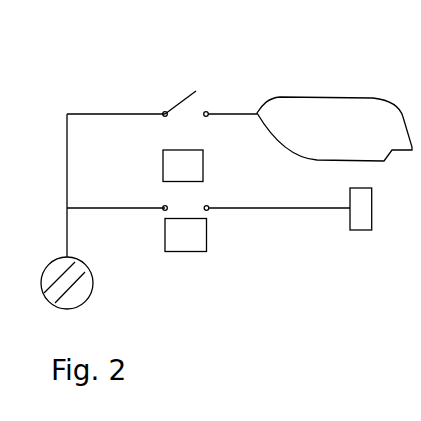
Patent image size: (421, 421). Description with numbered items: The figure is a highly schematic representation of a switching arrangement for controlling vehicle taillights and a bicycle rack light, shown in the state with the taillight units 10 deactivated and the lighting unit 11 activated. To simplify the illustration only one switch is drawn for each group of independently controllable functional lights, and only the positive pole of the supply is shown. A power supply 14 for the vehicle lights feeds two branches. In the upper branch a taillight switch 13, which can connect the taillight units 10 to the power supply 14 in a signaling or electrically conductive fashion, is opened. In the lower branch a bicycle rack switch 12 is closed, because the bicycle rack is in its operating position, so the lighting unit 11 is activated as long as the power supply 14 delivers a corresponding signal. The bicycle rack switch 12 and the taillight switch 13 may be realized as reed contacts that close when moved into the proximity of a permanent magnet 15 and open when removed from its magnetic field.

The taillight unit 10 is at (337, 132).
The lighting unit 11 is at (360, 197).
The bicycle rack switch 12 is at (197, 207).
The taillight switch 13 is at (185, 98).
The power supply 14 is at (83, 288).
The permanent magnet 15 is at (196, 177).